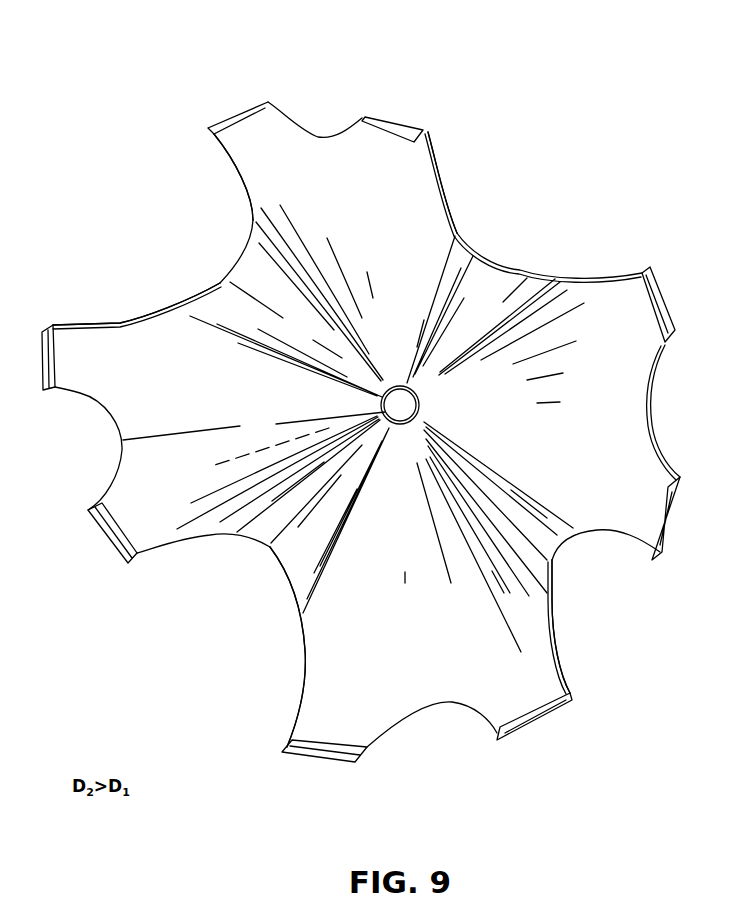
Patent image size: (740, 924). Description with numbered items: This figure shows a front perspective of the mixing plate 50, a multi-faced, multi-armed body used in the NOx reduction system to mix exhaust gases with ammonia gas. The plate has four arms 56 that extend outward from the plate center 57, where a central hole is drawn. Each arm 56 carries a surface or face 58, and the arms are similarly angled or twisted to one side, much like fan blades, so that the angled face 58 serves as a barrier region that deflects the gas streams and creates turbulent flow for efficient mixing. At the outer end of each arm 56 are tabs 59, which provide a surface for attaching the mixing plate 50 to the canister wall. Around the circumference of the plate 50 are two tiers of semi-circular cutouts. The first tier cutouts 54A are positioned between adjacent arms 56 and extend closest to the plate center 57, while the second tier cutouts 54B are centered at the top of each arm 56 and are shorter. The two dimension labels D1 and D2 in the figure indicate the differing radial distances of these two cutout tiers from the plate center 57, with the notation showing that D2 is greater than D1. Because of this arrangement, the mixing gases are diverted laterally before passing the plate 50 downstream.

The mixing plate 50 is at (555, 167).
The first tier cutouts 54A is at (527, 235).
The second tier cutouts 54B is at (330, 117).
The arm 56 is at (420, 182).
The plate center 57 is at (400, 425).
The face 58 is at (388, 427).
The tab 59 is at (233, 122).
The first diameter D1 is at (270, 312).
The second diameter D2 is at (254, 426).